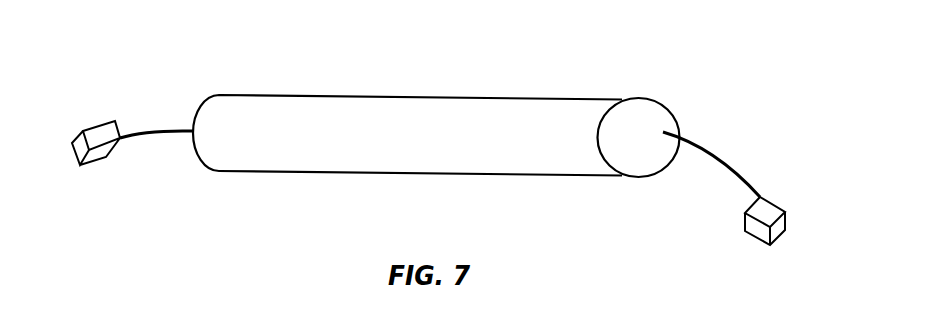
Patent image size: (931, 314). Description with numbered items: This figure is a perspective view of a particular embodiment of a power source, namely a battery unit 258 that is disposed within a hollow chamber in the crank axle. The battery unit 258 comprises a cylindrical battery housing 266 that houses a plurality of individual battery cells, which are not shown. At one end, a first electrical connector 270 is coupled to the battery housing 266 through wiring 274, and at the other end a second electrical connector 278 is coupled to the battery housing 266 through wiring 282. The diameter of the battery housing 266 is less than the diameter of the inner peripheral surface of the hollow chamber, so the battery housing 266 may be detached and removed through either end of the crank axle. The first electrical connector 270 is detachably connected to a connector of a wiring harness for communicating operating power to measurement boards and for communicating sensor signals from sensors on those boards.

The battery unit 258 is at (447, 60).
The cylindrical battery housing 266 is at (333, 112).
The first electrical connector 270 is at (768, 208).
The wiring 274 is at (703, 148).
The second electrical connector 278 is at (90, 125).
The wiring 282 is at (153, 130).